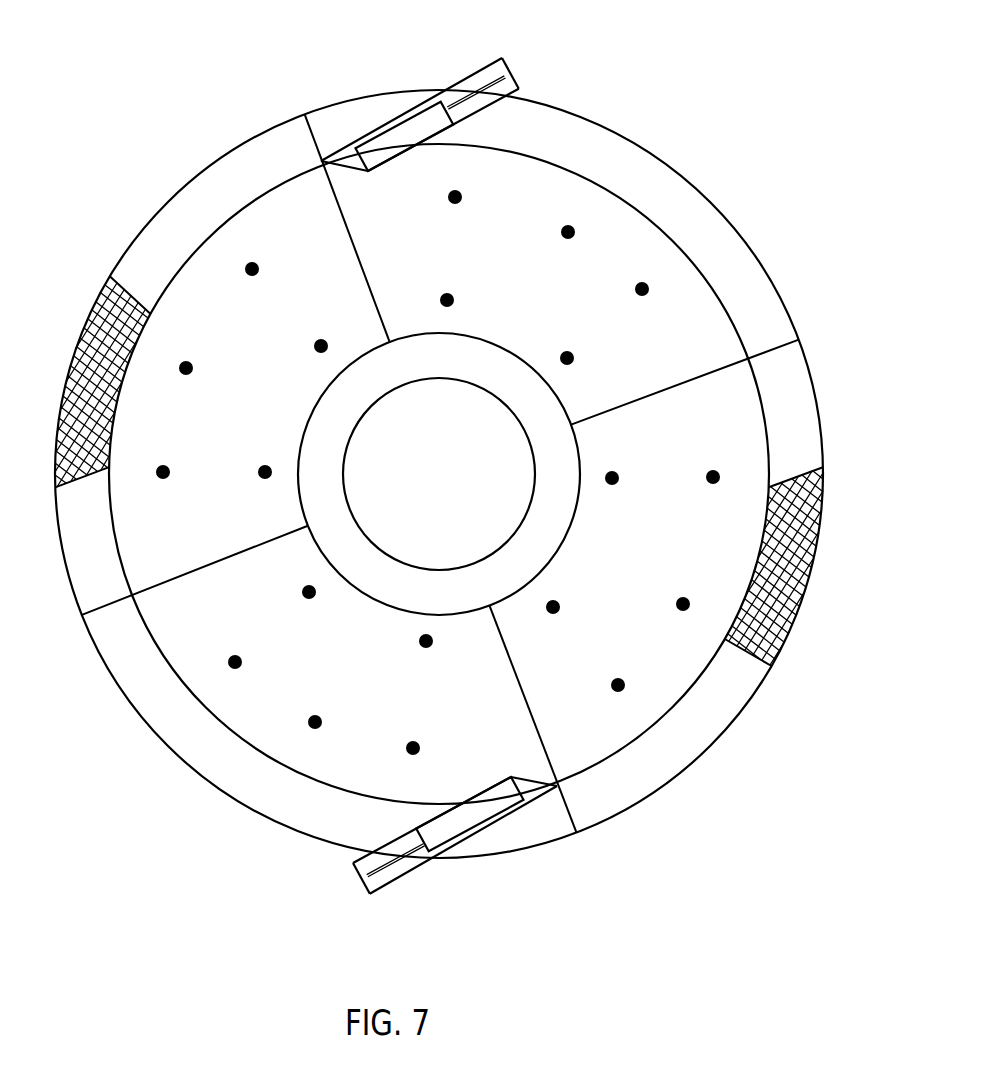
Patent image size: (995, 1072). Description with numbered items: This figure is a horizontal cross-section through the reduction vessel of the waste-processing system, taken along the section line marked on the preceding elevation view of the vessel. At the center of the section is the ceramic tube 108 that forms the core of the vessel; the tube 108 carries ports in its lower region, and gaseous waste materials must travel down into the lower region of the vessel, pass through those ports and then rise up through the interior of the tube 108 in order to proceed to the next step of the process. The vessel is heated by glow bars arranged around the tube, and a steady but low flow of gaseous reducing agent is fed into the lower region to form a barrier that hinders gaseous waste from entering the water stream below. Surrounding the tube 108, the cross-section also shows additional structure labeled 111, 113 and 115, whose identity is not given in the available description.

The ceramic tube 108 is at (540, 477).
The cross-hatched conductive segment 111 is at (808, 618).
The annular ring 113 is at (732, 248).
The segment divider line 115 is at (808, 332).